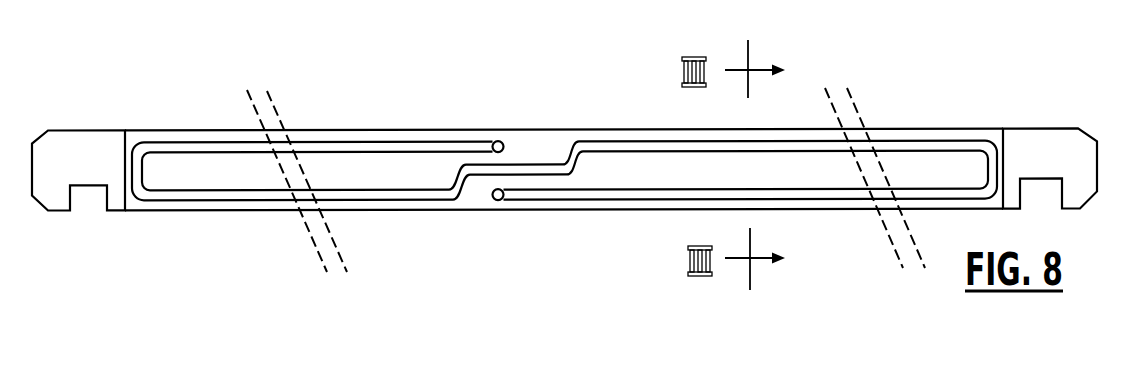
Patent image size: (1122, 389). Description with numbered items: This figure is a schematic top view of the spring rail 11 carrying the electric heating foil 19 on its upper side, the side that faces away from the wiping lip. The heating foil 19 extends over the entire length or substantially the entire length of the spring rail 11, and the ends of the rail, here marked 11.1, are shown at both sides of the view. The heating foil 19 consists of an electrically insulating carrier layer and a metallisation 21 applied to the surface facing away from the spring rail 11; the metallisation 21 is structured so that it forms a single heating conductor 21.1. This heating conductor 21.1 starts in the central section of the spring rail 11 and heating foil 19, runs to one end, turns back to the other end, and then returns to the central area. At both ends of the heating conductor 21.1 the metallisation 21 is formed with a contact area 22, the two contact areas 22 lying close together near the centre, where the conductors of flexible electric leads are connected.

The spring rail 11 is at (469, 126).
The end fastening portion of carrier plate 11.1 is at (82, 167).
The electric heating foil 19 is at (244, 215).
The metallisation 21 is at (378, 137).
The heating conductor 21.1 is at (329, 151).
The contact area 22 is at (505, 142).